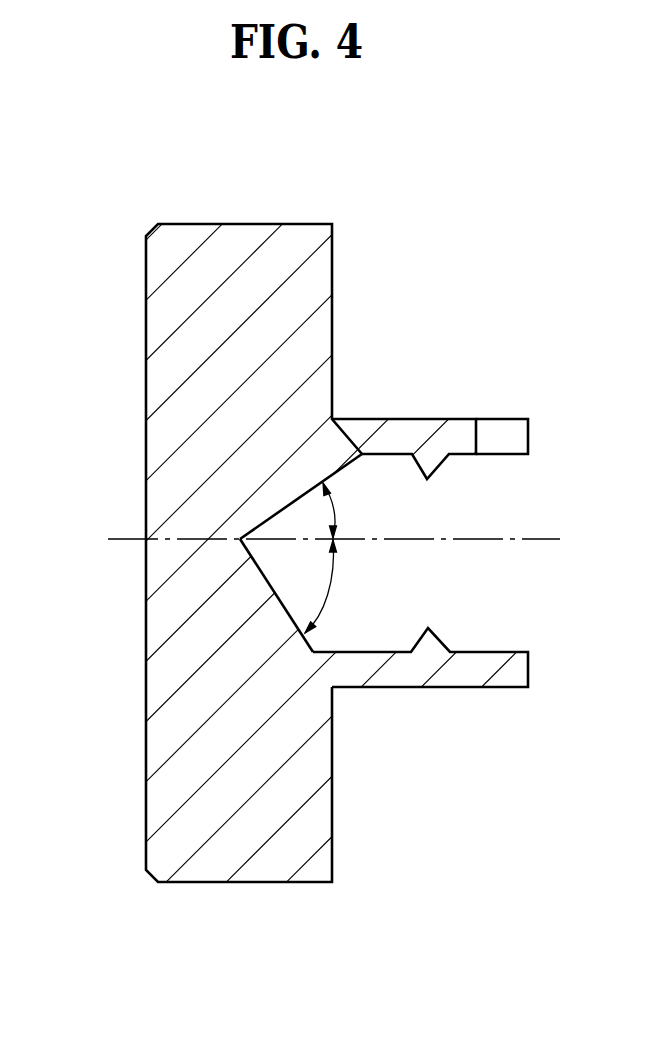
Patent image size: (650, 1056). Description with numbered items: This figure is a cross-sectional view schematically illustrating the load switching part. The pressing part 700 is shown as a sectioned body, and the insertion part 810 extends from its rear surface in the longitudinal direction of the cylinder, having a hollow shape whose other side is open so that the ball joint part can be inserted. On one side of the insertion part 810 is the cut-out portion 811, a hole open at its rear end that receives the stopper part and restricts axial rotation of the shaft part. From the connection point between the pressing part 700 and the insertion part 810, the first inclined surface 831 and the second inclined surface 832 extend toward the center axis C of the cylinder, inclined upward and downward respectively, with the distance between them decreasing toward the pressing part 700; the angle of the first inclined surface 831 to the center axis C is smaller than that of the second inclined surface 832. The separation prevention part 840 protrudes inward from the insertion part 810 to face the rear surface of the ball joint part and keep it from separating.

The pressing part 700 is at (235, 263).
The insertion part 810 is at (405, 435).
The cut-out portion 811 is at (486, 446).
The first inclined surface 831 is at (299, 499).
The second inclined surface 832 is at (287, 610).
The separation prevention part 840 is at (432, 642).
The center axis C is at (116, 539).